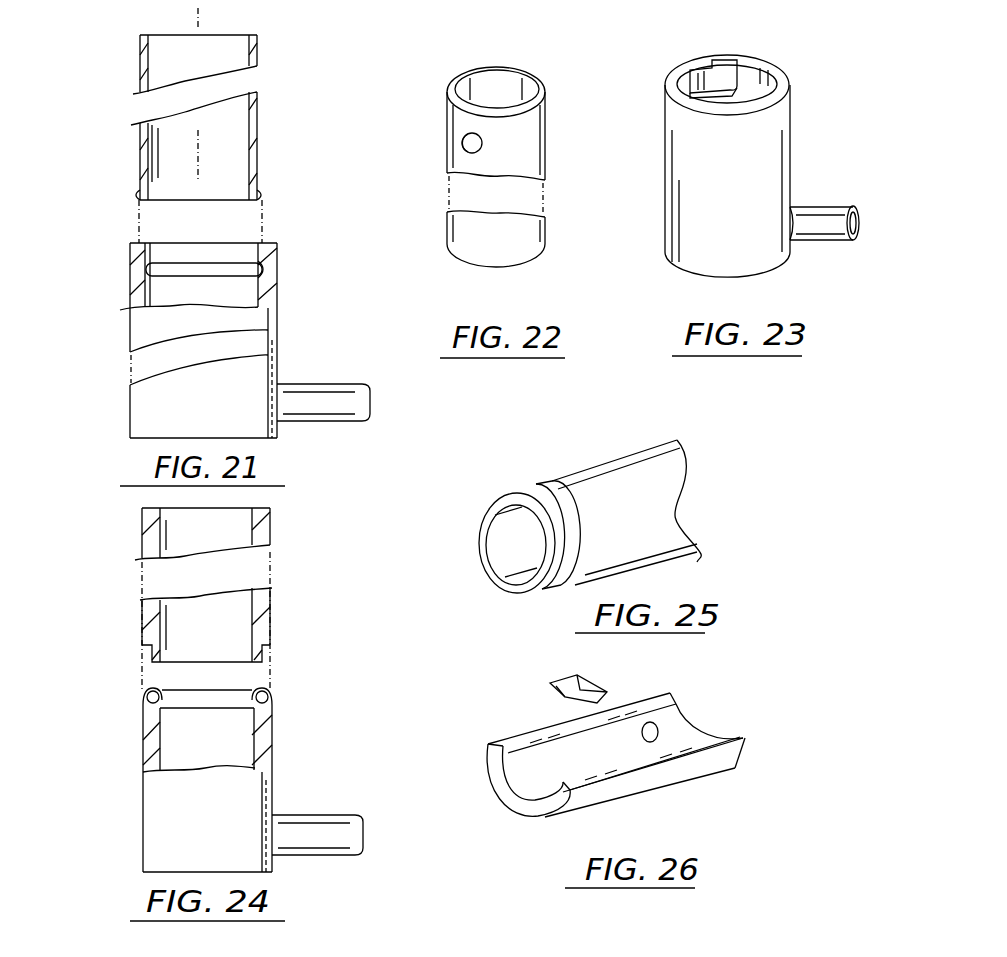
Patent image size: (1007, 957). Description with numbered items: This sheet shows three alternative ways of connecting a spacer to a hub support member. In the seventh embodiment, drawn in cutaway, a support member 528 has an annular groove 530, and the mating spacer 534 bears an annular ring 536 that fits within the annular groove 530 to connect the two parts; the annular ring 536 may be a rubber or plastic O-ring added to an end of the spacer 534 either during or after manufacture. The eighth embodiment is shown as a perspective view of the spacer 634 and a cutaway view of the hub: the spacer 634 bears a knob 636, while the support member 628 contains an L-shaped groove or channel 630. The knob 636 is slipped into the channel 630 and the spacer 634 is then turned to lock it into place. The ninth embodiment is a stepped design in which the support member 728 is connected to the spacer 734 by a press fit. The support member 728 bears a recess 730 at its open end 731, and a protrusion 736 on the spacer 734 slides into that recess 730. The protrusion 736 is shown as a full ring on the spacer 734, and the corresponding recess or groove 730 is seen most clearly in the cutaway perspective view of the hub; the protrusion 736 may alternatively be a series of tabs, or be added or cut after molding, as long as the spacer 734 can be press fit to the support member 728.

In FIG. 21, the spacer 534 is at (258, 110).
In FIG. 21, the annular ring 536 is at (258, 192).
In FIG. 21, the annular groove 530 is at (263, 284).
In FIG. 21, the support member 528 is at (285, 331).
In FIG. 22, the spacer 634 is at (549, 163).
In FIG. 22, the knob 636 is at (462, 138).
In FIG. 23, the support member 628 is at (793, 166).
In FIG. 23, the L-shaped groove or channel 630 is at (726, 76).
In FIG. 24, the protrusion 736 is at (150, 655).
In FIG. 25, the protrusion 736 is at (537, 486).
In FIG. 24, the recess 730 is at (157, 692).
In FIG. 26, the recess 730 is at (507, 794).
In FIG. 24, the open end 731 is at (272, 693).
In FIG. 26, the open end 731 is at (533, 822).
In FIG. 25, the spacer 734 is at (600, 457).
In FIG. 26, the support member 728 is at (666, 787).